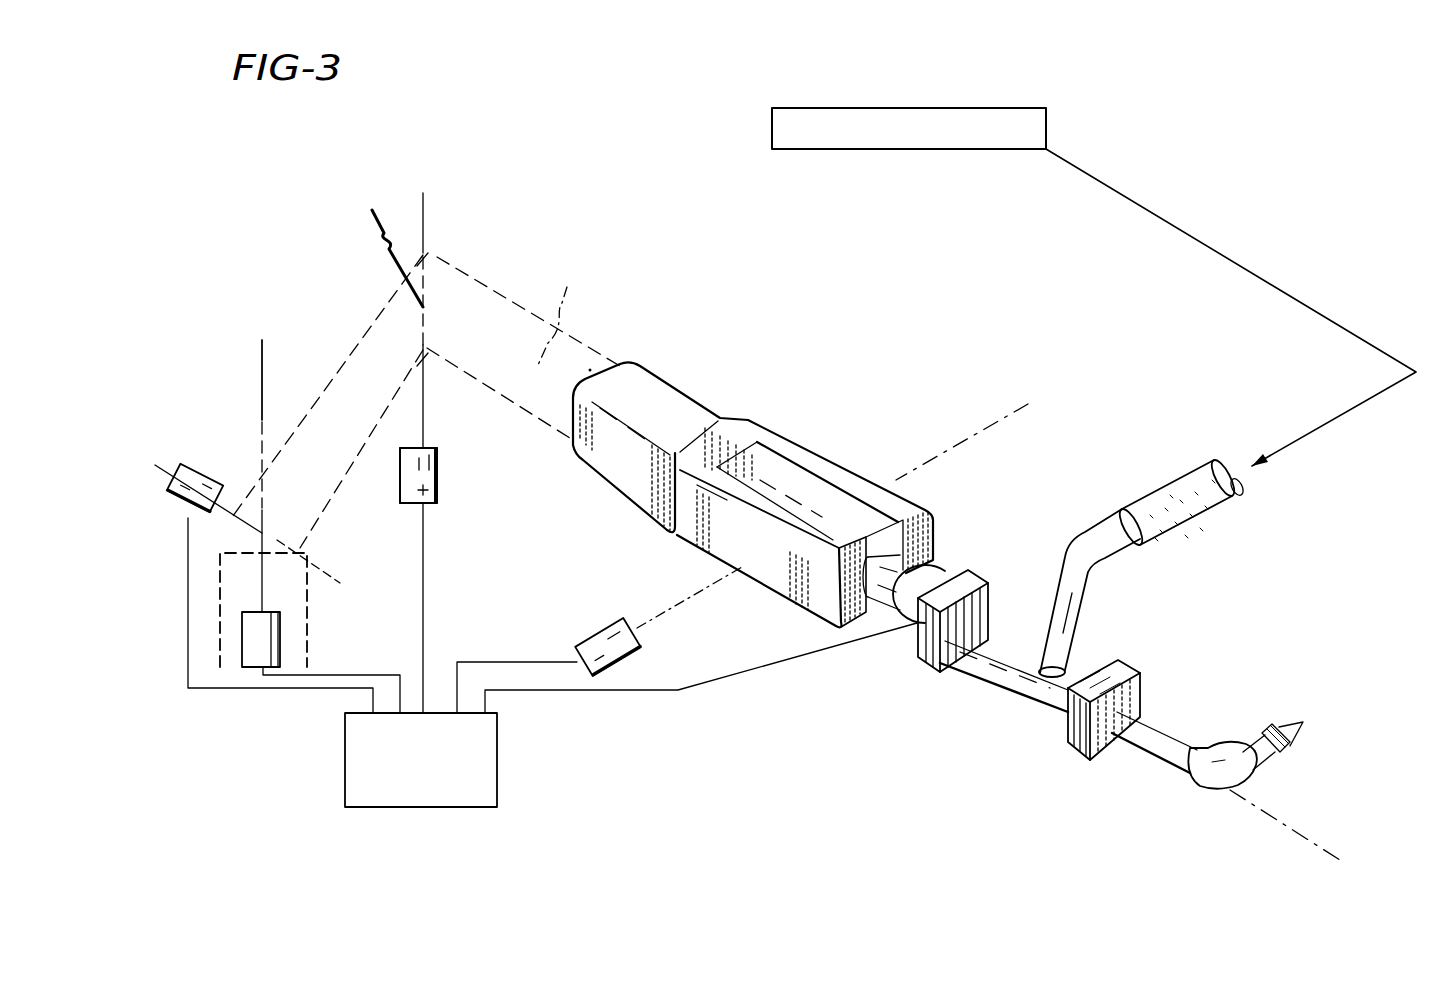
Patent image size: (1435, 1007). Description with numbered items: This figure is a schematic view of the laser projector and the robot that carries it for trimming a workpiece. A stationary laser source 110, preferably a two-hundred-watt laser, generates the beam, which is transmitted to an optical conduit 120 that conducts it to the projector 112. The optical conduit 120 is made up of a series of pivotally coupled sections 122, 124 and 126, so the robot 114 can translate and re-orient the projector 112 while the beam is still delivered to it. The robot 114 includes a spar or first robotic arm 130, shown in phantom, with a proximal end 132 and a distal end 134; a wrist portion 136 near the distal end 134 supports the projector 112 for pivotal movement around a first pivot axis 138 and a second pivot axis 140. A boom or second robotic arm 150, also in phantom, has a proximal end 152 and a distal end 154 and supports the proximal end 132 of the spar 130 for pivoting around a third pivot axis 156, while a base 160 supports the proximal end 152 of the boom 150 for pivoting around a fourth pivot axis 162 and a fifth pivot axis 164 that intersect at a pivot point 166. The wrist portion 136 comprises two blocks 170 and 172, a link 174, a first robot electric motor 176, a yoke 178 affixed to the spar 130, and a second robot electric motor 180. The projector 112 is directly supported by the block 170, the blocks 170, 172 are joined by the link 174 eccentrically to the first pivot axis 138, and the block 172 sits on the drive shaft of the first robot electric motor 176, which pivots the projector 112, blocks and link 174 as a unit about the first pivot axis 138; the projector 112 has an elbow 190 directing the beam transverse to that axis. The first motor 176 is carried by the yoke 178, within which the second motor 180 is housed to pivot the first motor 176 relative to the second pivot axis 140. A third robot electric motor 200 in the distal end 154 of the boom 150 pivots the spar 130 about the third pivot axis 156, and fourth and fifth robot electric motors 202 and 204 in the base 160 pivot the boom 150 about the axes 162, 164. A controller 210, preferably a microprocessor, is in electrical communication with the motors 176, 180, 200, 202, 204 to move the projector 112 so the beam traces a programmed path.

The laser source 110 is at (920, 124).
The projector 112 is at (1145, 753).
The robot 114 is at (468, 268).
The optical conduit 120 is at (1324, 316).
The pivotally coupled section 122 is at (1093, 537).
The pivotally coupled section 124 is at (1073, 627).
The pivotally coupled section 126 is at (1098, 662).
The spar 130 is at (569, 309).
The proximal end of spar 132 is at (440, 344).
The distal end of spar 134 is at (660, 412).
The wrist portion 136 is at (824, 472).
The first pivot axis 138 is at (1327, 847).
The second pivot axis 140 is at (978, 436).
The boom 150 is at (333, 425).
The proximal end of boom 152 is at (395, 491).
The distal end of boom 154 is at (388, 355).
The third pivot axis 156 is at (383, 241).
The base 160 is at (297, 627).
The fourth pivot axis 162 is at (307, 553).
The fifth pivot axis 164 is at (262, 375).
The pivot point 166 is at (262, 532).
The block 170 is at (1138, 695).
The block 172 is at (988, 603).
The link 174 is at (1020, 680).
The first robot electric motor 176 is at (937, 577).
The yoke 178 is at (772, 570).
The second robot electric motor 180 is at (602, 637).
The elbow 190 is at (1207, 777).
The third robot electric motor 200 is at (437, 493).
The fourth robot electric motor 202 is at (185, 458).
The fifth robot electric motor 204 is at (253, 655).
The controller 210 is at (358, 768).